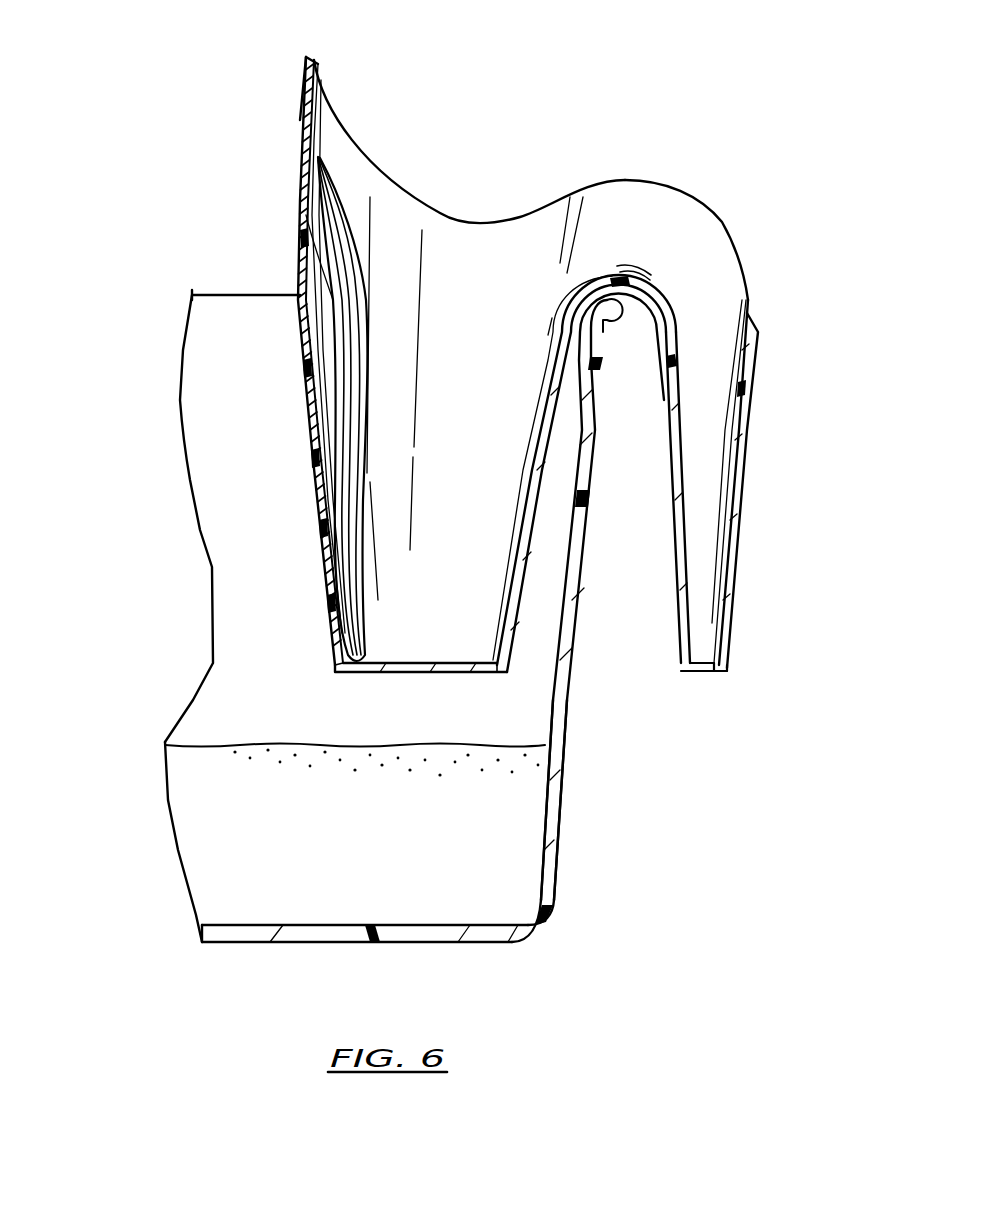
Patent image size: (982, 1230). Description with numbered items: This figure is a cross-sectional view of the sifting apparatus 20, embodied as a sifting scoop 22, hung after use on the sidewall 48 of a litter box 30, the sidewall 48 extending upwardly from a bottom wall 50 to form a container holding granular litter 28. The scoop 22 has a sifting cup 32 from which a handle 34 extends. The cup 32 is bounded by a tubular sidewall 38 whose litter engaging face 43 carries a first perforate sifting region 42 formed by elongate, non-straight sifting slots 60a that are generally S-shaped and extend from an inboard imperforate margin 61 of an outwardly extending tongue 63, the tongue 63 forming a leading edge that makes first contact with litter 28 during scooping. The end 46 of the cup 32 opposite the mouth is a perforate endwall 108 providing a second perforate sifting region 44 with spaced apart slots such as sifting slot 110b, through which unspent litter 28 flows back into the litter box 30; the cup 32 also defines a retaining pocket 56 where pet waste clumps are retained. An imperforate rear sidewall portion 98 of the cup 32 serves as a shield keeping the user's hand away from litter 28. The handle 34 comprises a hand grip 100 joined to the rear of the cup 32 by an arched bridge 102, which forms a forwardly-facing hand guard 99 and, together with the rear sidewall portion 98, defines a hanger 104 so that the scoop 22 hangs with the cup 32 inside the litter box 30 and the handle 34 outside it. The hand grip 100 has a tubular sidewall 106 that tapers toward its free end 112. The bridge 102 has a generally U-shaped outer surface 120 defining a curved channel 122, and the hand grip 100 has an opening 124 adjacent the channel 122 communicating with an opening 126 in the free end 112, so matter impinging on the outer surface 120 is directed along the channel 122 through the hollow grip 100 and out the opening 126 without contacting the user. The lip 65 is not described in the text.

The sifting apparatus 20 is at (276, 201).
The sifting scoop 22 is at (622, 118).
The litter 28 is at (195, 804).
The litter box 30 is at (578, 880).
The sifting cup 32 is at (406, 184).
The handle 34 is at (754, 448).
The sidewall 38 is at (491, 233).
The first perforate sifting region 42 is at (294, 398).
The litter engaging face 43 is at (303, 93).
The second perforate sifting region 44 is at (437, 681).
The end 46 is at (343, 684).
The sidewall 48 is at (597, 468).
The bottom wall 50 is at (408, 944).
The retaining pocket 56 is at (448, 240).
The sifting slots 60a is at (323, 163).
The inboard imperforate margin 61 is at (304, 58).
The tongue 63 is at (313, 56).
The lip 65 is at (318, 110).
The rear sidewall portion 98 is at (540, 468).
The hand guard 99 is at (667, 168).
The hand grip 100 is at (758, 390).
The bridge 102 is at (664, 287).
The hanger 104 is at (641, 322).
The tubular sidewall 106 is at (678, 568).
The perforate endwall 108 is at (500, 676).
The sifting slot 110b is at (405, 673).
The free end 112 is at (719, 676).
The outer surface 120 is at (635, 262).
The channel 122 is at (600, 246).
The opening 124 is at (705, 322).
The opening 126 is at (688, 674).